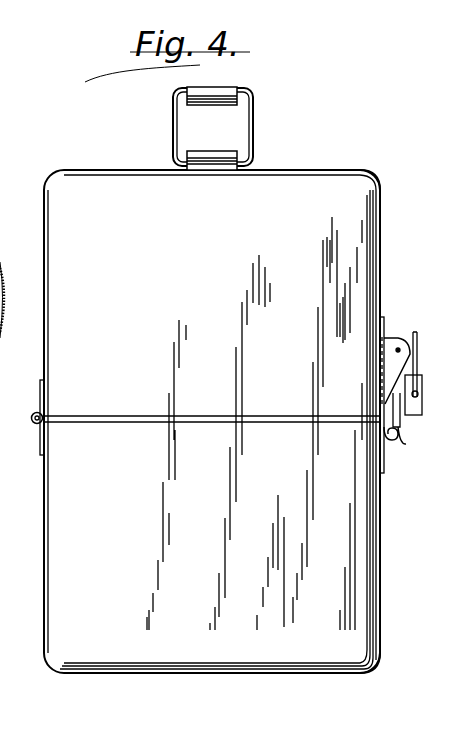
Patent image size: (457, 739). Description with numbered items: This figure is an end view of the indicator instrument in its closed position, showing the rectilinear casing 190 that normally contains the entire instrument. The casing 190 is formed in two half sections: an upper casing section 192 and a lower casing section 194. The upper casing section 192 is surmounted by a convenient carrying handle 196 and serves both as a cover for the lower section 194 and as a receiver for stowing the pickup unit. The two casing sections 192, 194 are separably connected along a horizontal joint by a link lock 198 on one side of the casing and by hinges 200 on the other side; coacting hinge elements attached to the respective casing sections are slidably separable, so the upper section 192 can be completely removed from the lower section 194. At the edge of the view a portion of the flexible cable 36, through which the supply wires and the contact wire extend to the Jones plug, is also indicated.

The flexible cable 36 is at (0, 259).
The rectilinear casing 190 is at (388, 282).
The upper casing section 192 is at (342, 188).
The lower casing section 194 is at (307, 660).
The carrying handle 196 is at (175, 133).
The link lock 198 is at (400, 434).
The hinges 200 is at (32, 422).